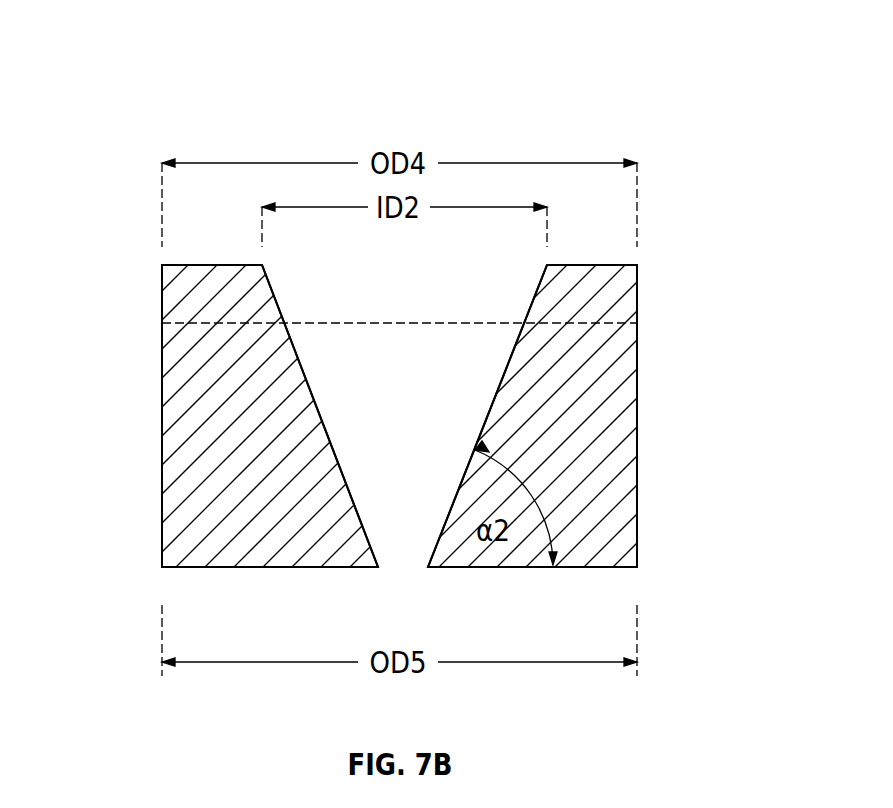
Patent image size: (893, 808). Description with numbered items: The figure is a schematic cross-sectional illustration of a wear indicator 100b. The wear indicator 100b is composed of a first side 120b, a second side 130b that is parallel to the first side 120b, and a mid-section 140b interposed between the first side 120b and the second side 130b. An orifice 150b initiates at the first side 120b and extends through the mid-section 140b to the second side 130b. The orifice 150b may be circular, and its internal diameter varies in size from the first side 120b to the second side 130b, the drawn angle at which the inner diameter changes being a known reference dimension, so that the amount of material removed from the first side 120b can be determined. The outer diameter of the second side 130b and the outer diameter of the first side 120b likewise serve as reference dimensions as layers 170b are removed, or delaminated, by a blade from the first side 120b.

The wear indicator 100b is at (178, 108).
The first side 120b is at (607, 265).
The second side 130b is at (568, 567).
The mid-section 140b is at (637, 382).
The orifice 150b is at (385, 362).
The layers 170b is at (652, 297).